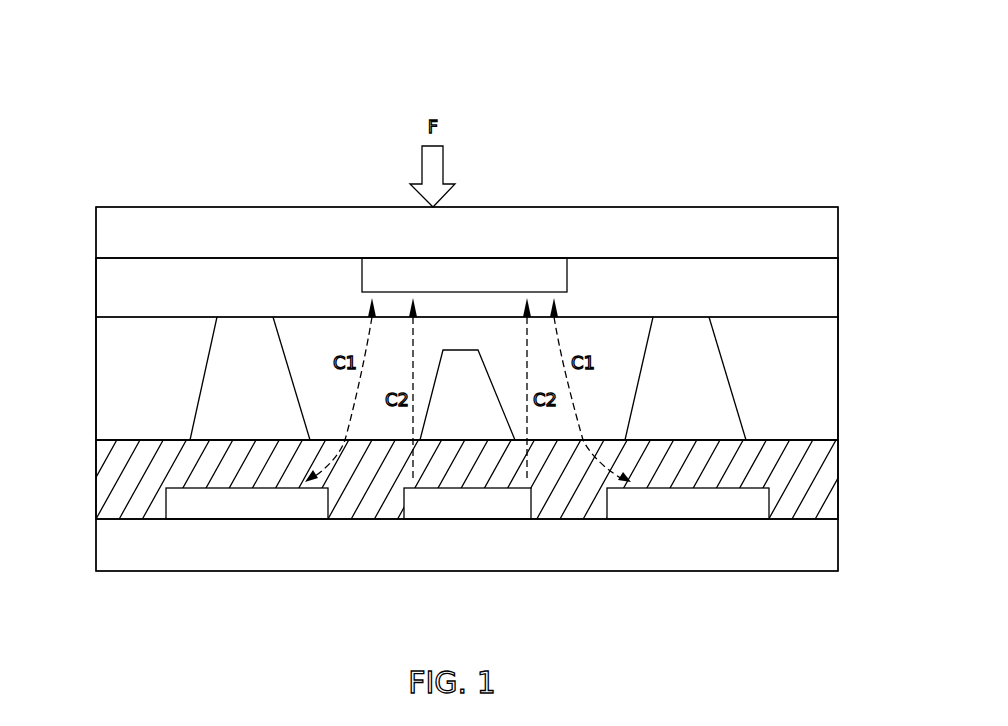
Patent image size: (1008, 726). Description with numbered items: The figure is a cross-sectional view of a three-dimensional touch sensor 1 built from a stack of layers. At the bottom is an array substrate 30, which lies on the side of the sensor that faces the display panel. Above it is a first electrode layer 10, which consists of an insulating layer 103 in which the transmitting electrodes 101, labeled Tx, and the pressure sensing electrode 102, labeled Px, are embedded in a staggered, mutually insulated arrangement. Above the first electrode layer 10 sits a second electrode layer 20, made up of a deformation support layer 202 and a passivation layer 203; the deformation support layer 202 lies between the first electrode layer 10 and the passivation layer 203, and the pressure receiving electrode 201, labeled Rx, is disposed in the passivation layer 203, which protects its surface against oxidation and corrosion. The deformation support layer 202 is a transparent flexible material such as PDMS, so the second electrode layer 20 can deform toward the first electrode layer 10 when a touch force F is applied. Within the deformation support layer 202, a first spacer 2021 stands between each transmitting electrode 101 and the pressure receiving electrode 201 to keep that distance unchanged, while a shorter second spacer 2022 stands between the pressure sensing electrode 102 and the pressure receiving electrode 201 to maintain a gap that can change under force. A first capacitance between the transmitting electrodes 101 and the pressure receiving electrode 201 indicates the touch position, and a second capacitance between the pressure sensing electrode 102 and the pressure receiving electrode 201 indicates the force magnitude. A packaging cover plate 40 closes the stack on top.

The three-dimensional touch sensor 1 is at (132, 122).
The first electrode layer 10 is at (96, 440).
The second electrode layer 20 is at (96, 259).
The array substrate 30 is at (815, 552).
The packaging cover plate 40 is at (815, 240).
The transmitting electrode 101 is at (260, 498).
The pressure sensing electrode 102 is at (486, 508).
The insulating layer 103 is at (815, 492).
The pressure receiving electrode 201 is at (441, 272).
The deformation support layer 202 is at (815, 375).
The passivation layer 203 is at (815, 295).
The first spacer 2021 is at (213, 391).
The second spacer 2022 is at (458, 365).